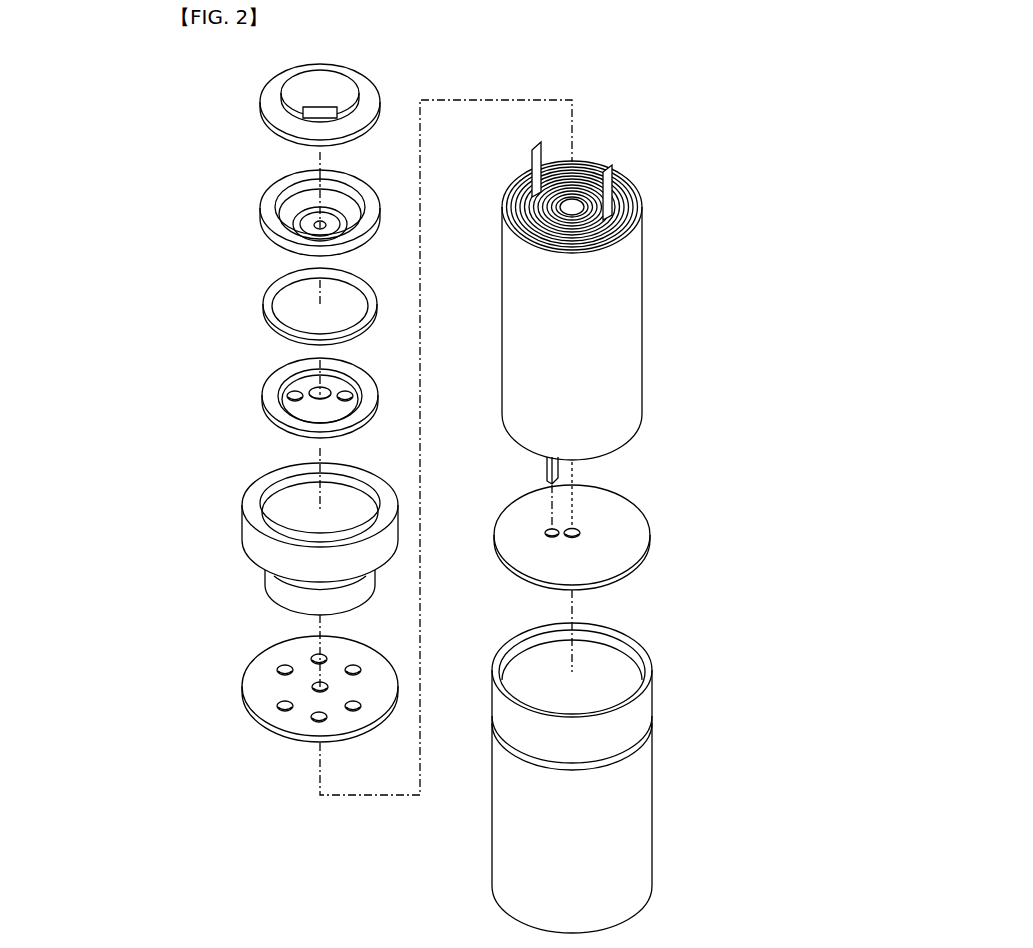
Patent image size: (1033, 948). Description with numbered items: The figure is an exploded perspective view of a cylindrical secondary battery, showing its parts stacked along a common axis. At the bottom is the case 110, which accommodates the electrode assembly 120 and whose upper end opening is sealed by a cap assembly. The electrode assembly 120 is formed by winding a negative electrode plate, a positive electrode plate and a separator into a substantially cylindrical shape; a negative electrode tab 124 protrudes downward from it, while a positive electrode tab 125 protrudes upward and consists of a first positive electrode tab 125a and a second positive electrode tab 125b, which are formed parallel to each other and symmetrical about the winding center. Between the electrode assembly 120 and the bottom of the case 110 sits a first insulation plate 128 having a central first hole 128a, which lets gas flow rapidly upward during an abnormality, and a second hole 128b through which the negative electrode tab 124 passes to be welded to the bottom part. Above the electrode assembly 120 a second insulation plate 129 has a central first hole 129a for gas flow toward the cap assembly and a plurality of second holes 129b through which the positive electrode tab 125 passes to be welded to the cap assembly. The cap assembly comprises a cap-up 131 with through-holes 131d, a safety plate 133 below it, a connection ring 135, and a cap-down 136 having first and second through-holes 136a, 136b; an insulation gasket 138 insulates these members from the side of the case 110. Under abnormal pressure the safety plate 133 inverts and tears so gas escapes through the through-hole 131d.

The case 110 is at (663, 808).
The electrode assembly 120 is at (609, 272).
The negative electrode tab 124 is at (545, 468).
The positive electrode tab 125 is at (601, 152).
The first positive electrode tab 125a is at (615, 178).
The second positive electrode tab 125b is at (542, 157).
The first insulation plate 128 is at (579, 535).
The first hole 128a is at (578, 528).
The second hole 128b is at (545, 531).
The second insulation plate 129 is at (284, 681).
The first hole 129a is at (313, 688).
The second holes 129b is at (282, 665).
The cap-up 131 is at (301, 113).
The through-hole 131d is at (312, 120).
The safety plate 133 is at (270, 206).
The connection ring 135 is at (264, 306).
The cap-down 136 is at (283, 396).
The first through-hole 136a is at (312, 390).
The second through-hole 136b is at (289, 395).
The insulation gasket 138 is at (250, 537).